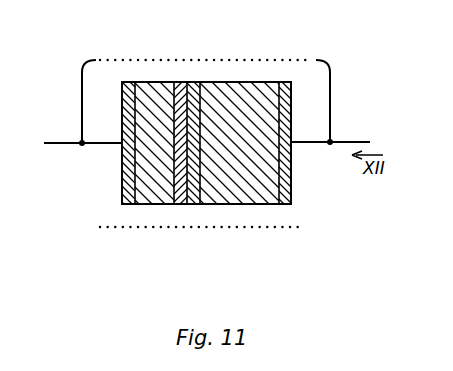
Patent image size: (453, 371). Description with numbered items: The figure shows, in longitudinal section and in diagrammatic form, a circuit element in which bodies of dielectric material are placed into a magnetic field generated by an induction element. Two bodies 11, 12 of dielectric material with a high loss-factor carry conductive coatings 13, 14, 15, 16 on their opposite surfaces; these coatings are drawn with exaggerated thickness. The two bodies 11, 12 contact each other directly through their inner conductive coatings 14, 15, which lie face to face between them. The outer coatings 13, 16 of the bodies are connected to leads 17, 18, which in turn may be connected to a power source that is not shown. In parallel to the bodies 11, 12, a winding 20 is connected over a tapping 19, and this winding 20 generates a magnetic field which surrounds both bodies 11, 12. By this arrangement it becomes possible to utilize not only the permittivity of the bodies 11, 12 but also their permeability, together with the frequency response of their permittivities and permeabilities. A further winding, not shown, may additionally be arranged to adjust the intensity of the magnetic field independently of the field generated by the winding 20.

The body of dielectric material 11 is at (147, 190).
The body of dielectric material 12 is at (235, 115).
The conductive coating 13 is at (122, 162).
The conductive coating 14 is at (185, 187).
The conductive coating 15 is at (187, 100).
The conductive coating 16 is at (290, 126).
The lead 17 is at (72, 142).
The lead 18 is at (352, 143).
The tapping 19 is at (82, 85).
The winding 20 is at (222, 228).